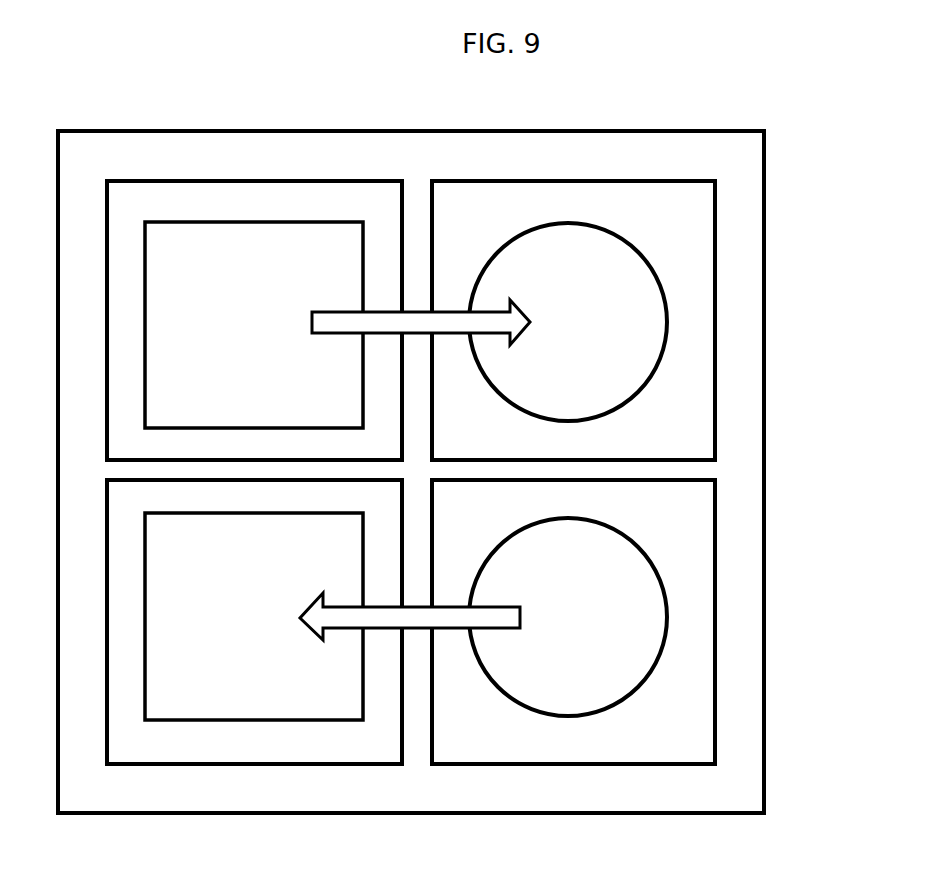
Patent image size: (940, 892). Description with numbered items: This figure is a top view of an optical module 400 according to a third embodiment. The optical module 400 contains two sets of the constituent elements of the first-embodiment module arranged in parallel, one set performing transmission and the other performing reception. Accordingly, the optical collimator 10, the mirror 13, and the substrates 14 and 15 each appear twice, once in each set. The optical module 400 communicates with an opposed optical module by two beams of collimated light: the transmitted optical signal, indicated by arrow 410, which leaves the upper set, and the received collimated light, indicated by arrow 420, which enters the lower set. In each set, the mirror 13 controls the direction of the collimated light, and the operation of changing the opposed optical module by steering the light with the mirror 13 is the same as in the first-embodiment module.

The optical module 400 is at (675, 130).
The optical collimator 10 is at (127, 180).
The substrate 14 is at (190, 222).
The substrate 15 is at (716, 238).
The mirror 13 is at (625, 403).
The arrow 410 is at (445, 307).
The arrow 420 is at (445, 607).